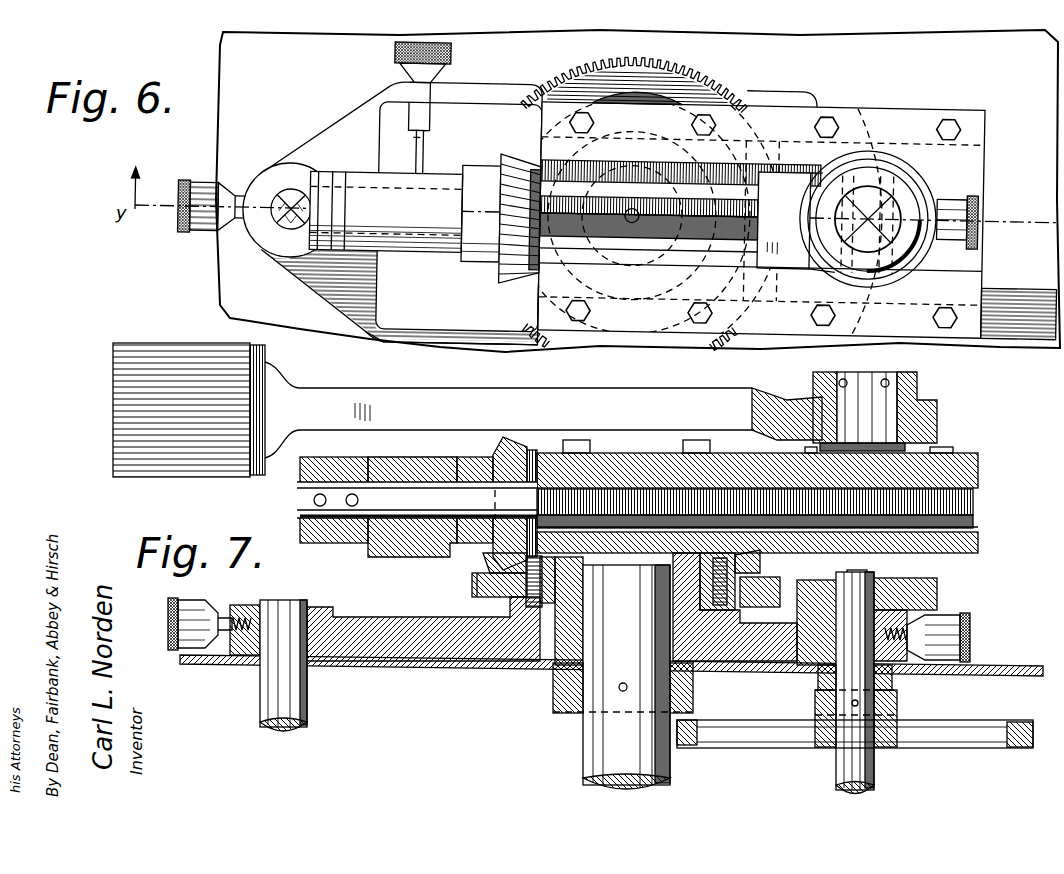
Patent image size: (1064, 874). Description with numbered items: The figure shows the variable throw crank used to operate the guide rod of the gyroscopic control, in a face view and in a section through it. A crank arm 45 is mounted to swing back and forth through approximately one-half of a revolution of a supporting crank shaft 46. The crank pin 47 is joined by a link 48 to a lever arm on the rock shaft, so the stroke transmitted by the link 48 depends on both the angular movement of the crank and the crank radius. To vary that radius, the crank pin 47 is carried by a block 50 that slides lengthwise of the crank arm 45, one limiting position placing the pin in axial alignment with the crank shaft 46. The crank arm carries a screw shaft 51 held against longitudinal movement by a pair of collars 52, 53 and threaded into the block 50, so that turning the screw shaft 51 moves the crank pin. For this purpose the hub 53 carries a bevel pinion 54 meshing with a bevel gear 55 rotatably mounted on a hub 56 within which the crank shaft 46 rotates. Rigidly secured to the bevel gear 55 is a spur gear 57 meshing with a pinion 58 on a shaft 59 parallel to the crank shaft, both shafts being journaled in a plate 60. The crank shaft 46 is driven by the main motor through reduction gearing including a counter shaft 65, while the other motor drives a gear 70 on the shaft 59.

In FIG. 6, the crank arm 45 is at (928, 96).
In FIG. 7, the crank arm 45 is at (415, 550).
In FIG. 6, the crank shaft 46 is at (670, 236).
In FIG. 7, the crank shaft 46 is at (607, 755).
In FIG. 6, the crank pin 47 is at (870, 196).
In FIG. 7, the crank pin 47 is at (875, 411).
In FIG. 6, the link 48 is at (798, 180).
In FIG. 7, the link 48 is at (347, 384).
In FIG. 6, the block 50 is at (967, 250).
In FIG. 7, the block 50 is at (963, 455).
In FIG. 6, the screw shaft 51 is at (640, 243).
In FIG. 7, the screw shaft 51 is at (312, 500).
In FIG. 6, the collar 52 is at (341, 171).
In FIG. 7, the collar 52 is at (352, 543).
In FIG. 6, the hub 53 is at (480, 245).
In FIG. 7, the hub 53 is at (488, 462).
In FIG. 6, the bevel pinion 54 is at (513, 153).
In FIG. 7, the bevel pinion 54 is at (515, 450).
In FIG. 6, the bevel gear 55 is at (678, 103).
In FIG. 7, the bevel gear 55 is at (760, 568).
In FIG. 6, the hub 56 is at (540, 301).
In FIG. 7, the hub 56 is at (583, 587).
In FIG. 6, the spur gear 57 is at (683, 82).
In FIG. 7, the spur gear 57 is at (475, 583).
In FIG. 7, the pinion 58 is at (940, 592).
In FIG. 7, the shaft 59 is at (842, 775).
In FIG. 6, the plate 60 is at (455, 340).
In FIG. 7, the plate 60 is at (493, 650).
In FIG. 6, the counter shaft 65 is at (288, 190).
In FIG. 7, the counter shaft 65 is at (310, 695).
In FIG. 7, the gear 70 is at (1003, 725).